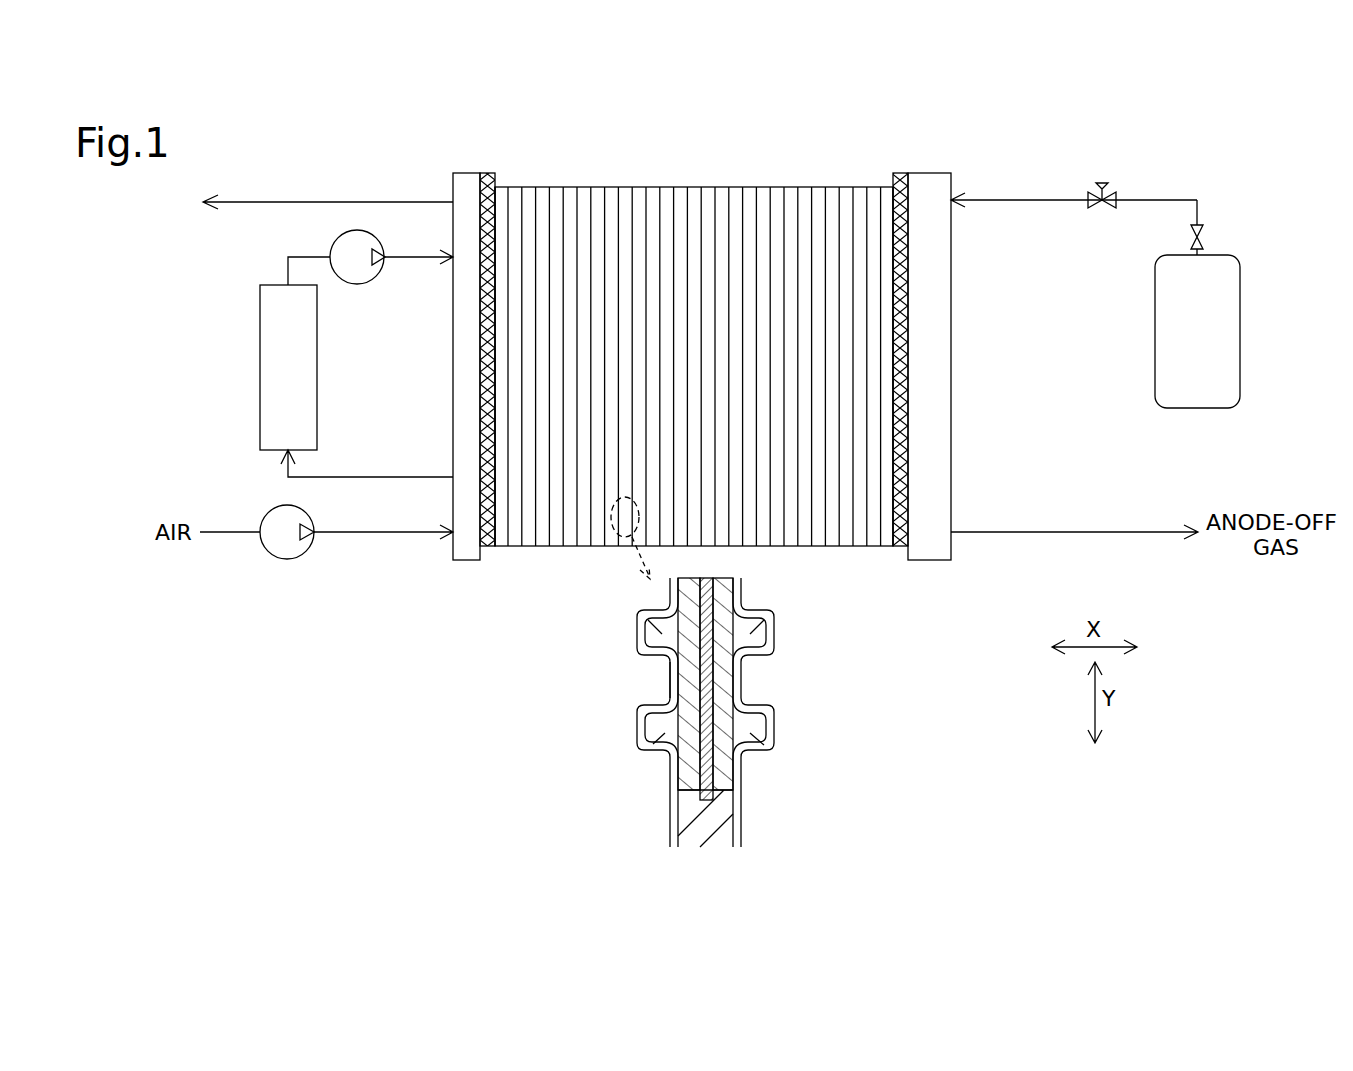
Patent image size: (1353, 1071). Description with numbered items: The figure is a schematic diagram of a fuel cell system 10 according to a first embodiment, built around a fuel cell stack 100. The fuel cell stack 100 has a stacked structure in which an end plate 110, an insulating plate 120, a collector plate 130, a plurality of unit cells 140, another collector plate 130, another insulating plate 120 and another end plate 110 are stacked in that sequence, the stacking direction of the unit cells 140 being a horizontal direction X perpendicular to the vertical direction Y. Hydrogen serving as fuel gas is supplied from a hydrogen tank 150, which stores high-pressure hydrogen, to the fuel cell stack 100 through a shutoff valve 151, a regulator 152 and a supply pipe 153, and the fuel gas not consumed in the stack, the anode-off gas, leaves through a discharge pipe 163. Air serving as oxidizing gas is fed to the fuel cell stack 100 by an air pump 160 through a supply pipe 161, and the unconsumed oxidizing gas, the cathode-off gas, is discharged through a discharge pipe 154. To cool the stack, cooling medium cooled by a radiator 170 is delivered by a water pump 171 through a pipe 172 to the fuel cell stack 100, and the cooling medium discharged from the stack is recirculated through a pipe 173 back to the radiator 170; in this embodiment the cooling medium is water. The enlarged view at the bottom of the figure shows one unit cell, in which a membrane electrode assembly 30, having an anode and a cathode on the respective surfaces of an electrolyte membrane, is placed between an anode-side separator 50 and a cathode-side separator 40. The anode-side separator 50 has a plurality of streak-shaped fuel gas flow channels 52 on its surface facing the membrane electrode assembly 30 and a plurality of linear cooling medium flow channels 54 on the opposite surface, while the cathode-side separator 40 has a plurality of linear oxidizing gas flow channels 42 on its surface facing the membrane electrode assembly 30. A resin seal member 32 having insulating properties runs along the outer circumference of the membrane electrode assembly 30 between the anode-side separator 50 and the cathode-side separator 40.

The fuel cell system 10 is at (311, 108).
The fuel cell stack 100 is at (951, 117).
The end plate 110 is at (468, 173).
The insulating plate 120 is at (488, 182).
The collector plate 130 is at (510, 187).
The unit cells 140 is at (712, 187).
The hydrogen tank 150 is at (1242, 316).
The shutoff valve 151 is at (1203, 245).
The regulator 152 is at (1104, 203).
The supply pipe 153 is at (1062, 199).
The discharge pipe 154 is at (352, 200).
The air pump 160 is at (285, 560).
The supply pipe 161 is at (380, 534).
The discharge pipe 163 is at (1142, 532).
The radiator 170 is at (260, 366).
The water pump 171 is at (360, 284).
The pipe 172 is at (414, 260).
The pipe 173 is at (346, 477).
The membrane electrode assembly 30 is at (706, 578).
The resin seal member 32 is at (712, 830).
The cathode-side separator 40 is at (742, 848).
The oxidizing gas flow channels 42 is at (766, 616).
The anode-side separator 50 is at (672, 848).
The fuel gas flow channels 52 is at (645, 616).
The cooling medium flow channels 54 is at (668, 680).